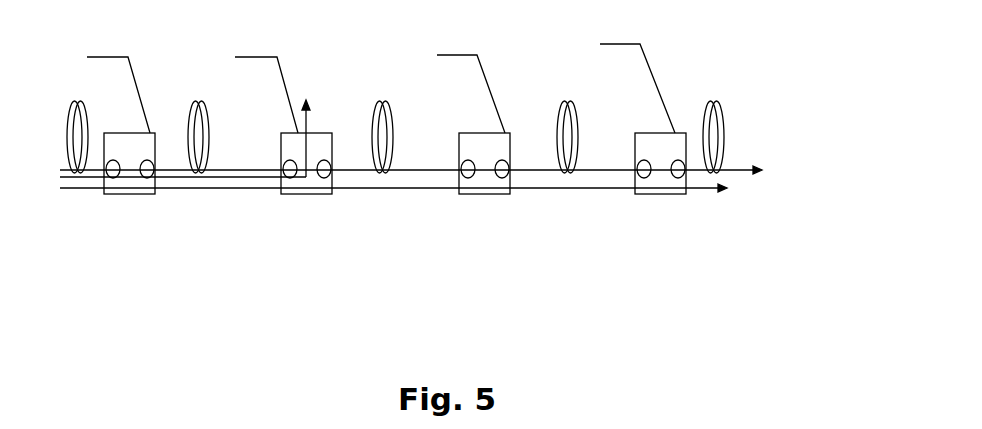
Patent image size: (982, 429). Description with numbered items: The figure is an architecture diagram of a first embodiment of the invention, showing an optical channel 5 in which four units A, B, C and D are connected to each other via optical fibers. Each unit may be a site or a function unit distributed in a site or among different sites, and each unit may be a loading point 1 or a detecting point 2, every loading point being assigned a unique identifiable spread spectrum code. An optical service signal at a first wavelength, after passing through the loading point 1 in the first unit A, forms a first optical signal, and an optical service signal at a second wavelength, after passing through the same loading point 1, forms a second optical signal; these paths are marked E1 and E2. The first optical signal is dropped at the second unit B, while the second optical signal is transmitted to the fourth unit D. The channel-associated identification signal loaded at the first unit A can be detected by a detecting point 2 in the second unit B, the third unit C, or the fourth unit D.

The loading point 1 is at (109, 161).
The detecting point 2 is at (460, 159).
The optical channel 5 is at (411, 107).
The first electrical line E1 is at (213, 262).
The second electrical line E2 is at (383, 260).